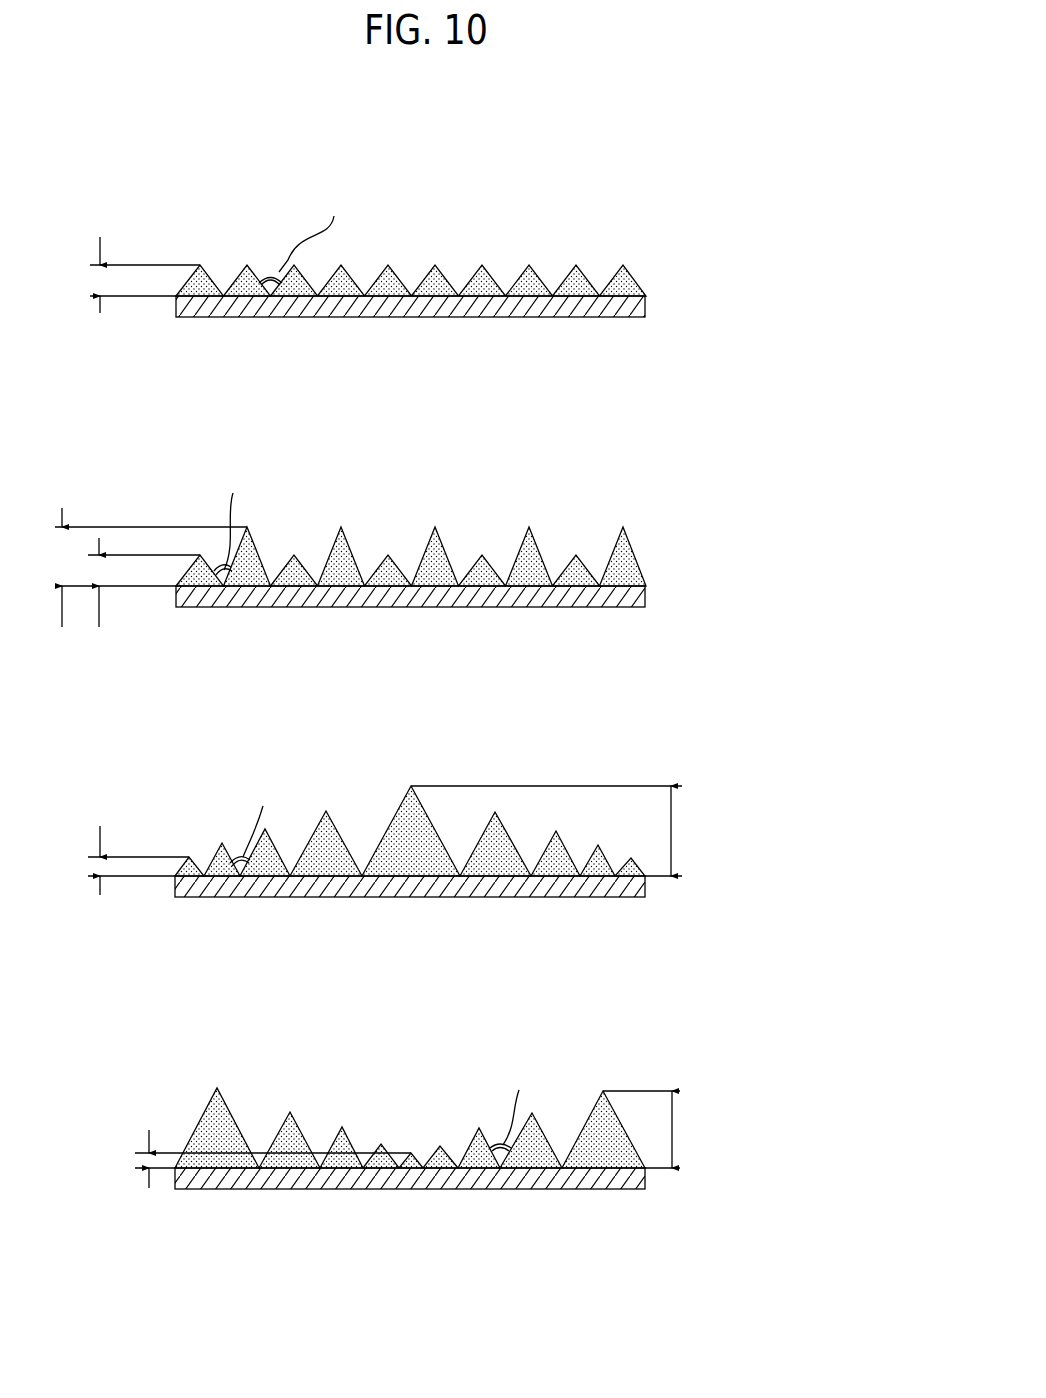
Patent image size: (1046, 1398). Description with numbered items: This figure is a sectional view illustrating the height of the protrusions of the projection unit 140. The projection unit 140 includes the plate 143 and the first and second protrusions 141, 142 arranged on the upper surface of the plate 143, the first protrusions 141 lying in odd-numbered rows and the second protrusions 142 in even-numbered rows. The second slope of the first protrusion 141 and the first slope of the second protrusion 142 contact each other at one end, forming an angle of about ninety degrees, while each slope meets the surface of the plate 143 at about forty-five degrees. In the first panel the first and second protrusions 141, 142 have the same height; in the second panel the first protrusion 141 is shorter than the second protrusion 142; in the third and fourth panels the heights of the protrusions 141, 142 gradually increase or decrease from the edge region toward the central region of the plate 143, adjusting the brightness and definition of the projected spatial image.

The projection unit 140 is at (648, 134).
The first protrusion 141 is at (207, 268).
The second protrusion 142 is at (257, 277).
The plate 143 is at (645, 310).